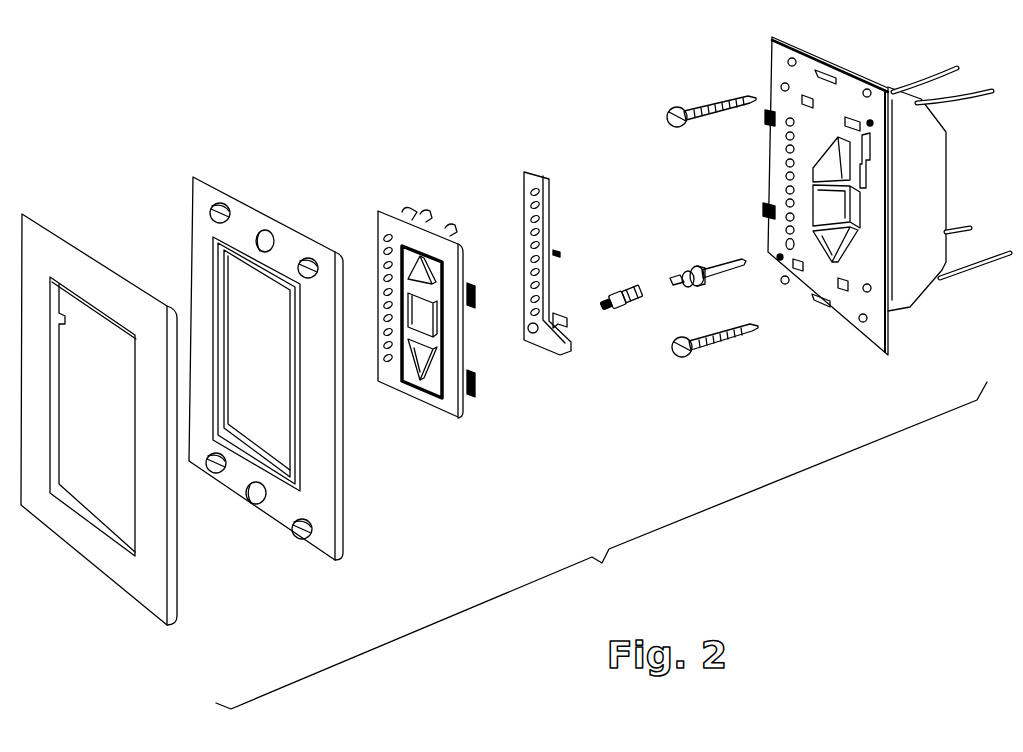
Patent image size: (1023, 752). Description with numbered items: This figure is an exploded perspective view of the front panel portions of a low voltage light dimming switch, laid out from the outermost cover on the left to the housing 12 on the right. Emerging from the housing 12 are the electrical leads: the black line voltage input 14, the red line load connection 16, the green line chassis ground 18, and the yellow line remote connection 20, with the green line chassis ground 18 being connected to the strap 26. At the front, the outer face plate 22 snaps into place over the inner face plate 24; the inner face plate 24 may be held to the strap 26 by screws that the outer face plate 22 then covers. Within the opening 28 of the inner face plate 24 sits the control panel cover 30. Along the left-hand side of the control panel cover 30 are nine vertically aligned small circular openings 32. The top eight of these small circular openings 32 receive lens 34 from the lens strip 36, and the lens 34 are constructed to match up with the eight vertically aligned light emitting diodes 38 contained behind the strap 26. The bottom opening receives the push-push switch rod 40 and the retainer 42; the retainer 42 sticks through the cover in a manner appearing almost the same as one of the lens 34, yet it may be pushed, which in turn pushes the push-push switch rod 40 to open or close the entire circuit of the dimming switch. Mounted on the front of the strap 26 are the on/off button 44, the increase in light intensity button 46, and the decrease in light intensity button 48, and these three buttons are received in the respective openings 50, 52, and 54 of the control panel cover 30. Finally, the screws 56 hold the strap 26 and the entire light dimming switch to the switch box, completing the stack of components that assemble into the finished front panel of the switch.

The housing 12 is at (948, 160).
The black line voltage input 14 is at (929, 80).
The red line load connection 16 is at (964, 108).
The green line chassis ground 18 is at (994, 263).
The yellow line remote connection 20 is at (953, 231).
The outer face plate 22 is at (68, 536).
The inner face plate 24 is at (266, 356).
The strap 26 is at (814, 181).
The opening 28 is at (270, 285).
The control panel cover 30 is at (417, 300).
The small circular openings 32 is at (381, 266).
The lens 34 is at (530, 222).
The lens strip 36 is at (515, 240).
The light emitting diodes 38 is at (786, 180).
The push-push switch rod 40 is at (722, 260).
The retainer 42 is at (616, 288).
The on/off button 44 is at (853, 223).
The increase in light intensity button 46 is at (818, 158).
The decrease in light intensity button 48 is at (842, 252).
The opening 50 is at (436, 331).
The opening 52 is at (432, 282).
The opening 54 is at (430, 370).
The screws 56 is at (705, 97).